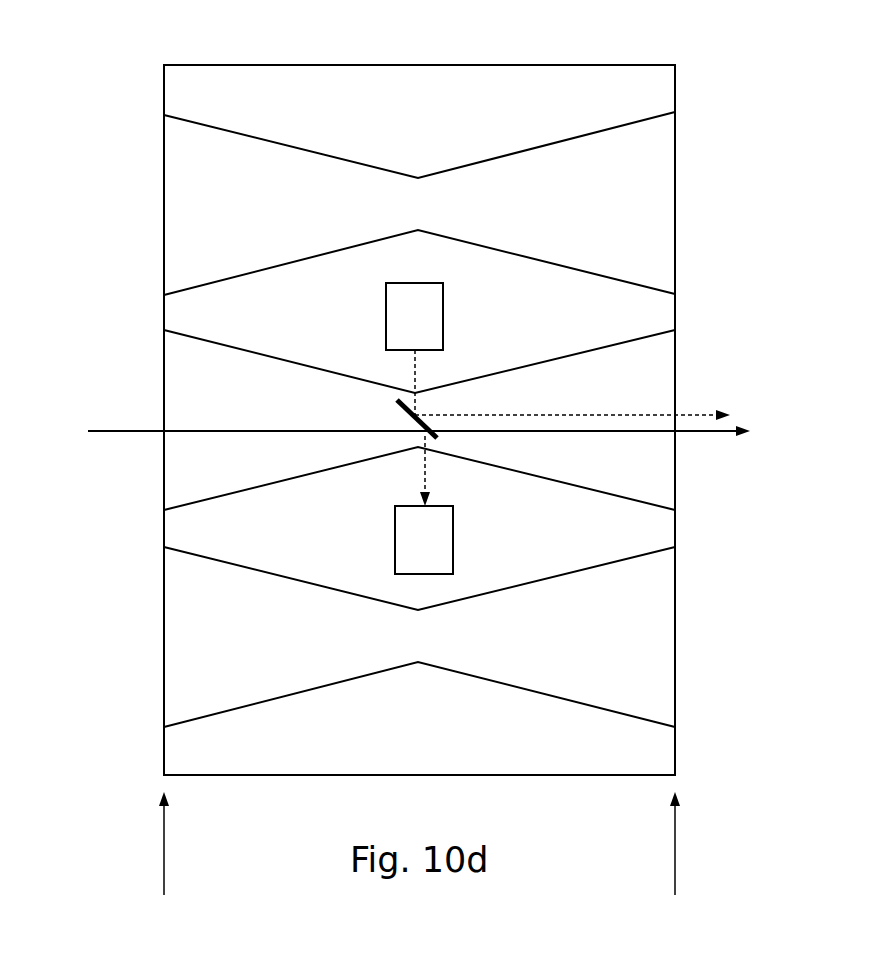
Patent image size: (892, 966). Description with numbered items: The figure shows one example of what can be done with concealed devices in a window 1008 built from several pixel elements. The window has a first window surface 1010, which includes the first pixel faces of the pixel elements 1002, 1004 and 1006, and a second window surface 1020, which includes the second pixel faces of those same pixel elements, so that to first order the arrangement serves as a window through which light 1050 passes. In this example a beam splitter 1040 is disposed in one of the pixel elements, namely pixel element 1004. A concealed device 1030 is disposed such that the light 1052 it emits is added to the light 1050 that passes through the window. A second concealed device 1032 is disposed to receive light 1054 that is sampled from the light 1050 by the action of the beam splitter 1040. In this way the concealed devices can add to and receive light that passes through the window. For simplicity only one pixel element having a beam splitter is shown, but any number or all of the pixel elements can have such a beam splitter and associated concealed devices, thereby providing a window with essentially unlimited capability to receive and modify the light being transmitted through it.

The light guide / waveguide body 1008 is at (275, 93).
The pixel element 1002 is at (647, 218).
The pixel element 1004 is at (647, 388).
The pixel element 1006 is at (648, 655).
The concealed device 1030 is at (396, 321).
The beam splitter 1040 is at (397, 400).
The concealed device 1032 is at (422, 539).
The light 1050 is at (692, 432).
The light emitted by concealed device 1052 is at (695, 414).
The sampled light 1054 is at (426, 475).
The first window surface 1010 is at (164, 865).
The second window surface 1020 is at (680, 865).